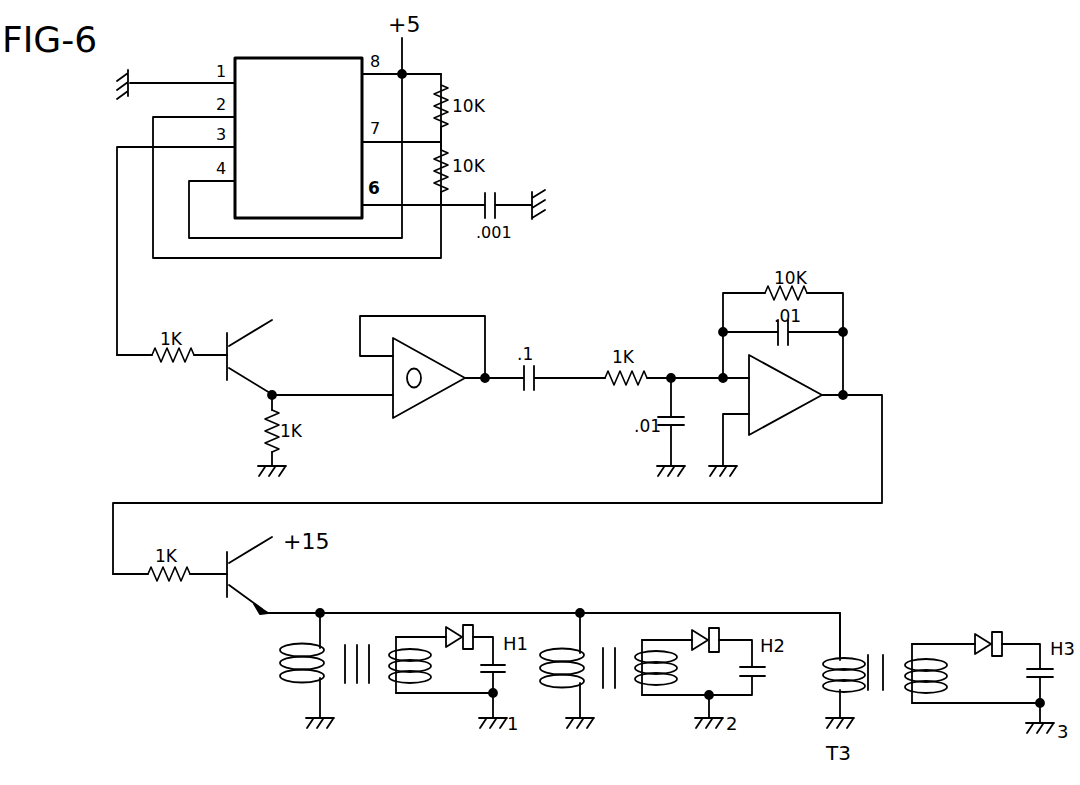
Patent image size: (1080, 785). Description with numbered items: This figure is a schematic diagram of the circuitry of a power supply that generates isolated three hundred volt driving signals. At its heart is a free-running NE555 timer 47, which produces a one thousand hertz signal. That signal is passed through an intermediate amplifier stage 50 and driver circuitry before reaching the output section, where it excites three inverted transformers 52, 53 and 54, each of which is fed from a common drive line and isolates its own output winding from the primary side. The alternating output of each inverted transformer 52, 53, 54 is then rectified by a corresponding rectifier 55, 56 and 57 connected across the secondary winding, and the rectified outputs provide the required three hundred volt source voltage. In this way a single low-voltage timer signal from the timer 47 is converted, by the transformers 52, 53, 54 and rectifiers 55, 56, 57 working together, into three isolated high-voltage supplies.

The free-running NE555 timer 47 is at (258, 58).
The amplifier 50 is at (437, 398).
The inverted transformer 52 is at (356, 690).
The inverted transformer 53 is at (612, 690).
The inverted transformer 54 is at (876, 693).
The rectifier 55 is at (451, 626).
The rectifier 56 is at (701, 626).
The rectifier 57 is at (987, 632).